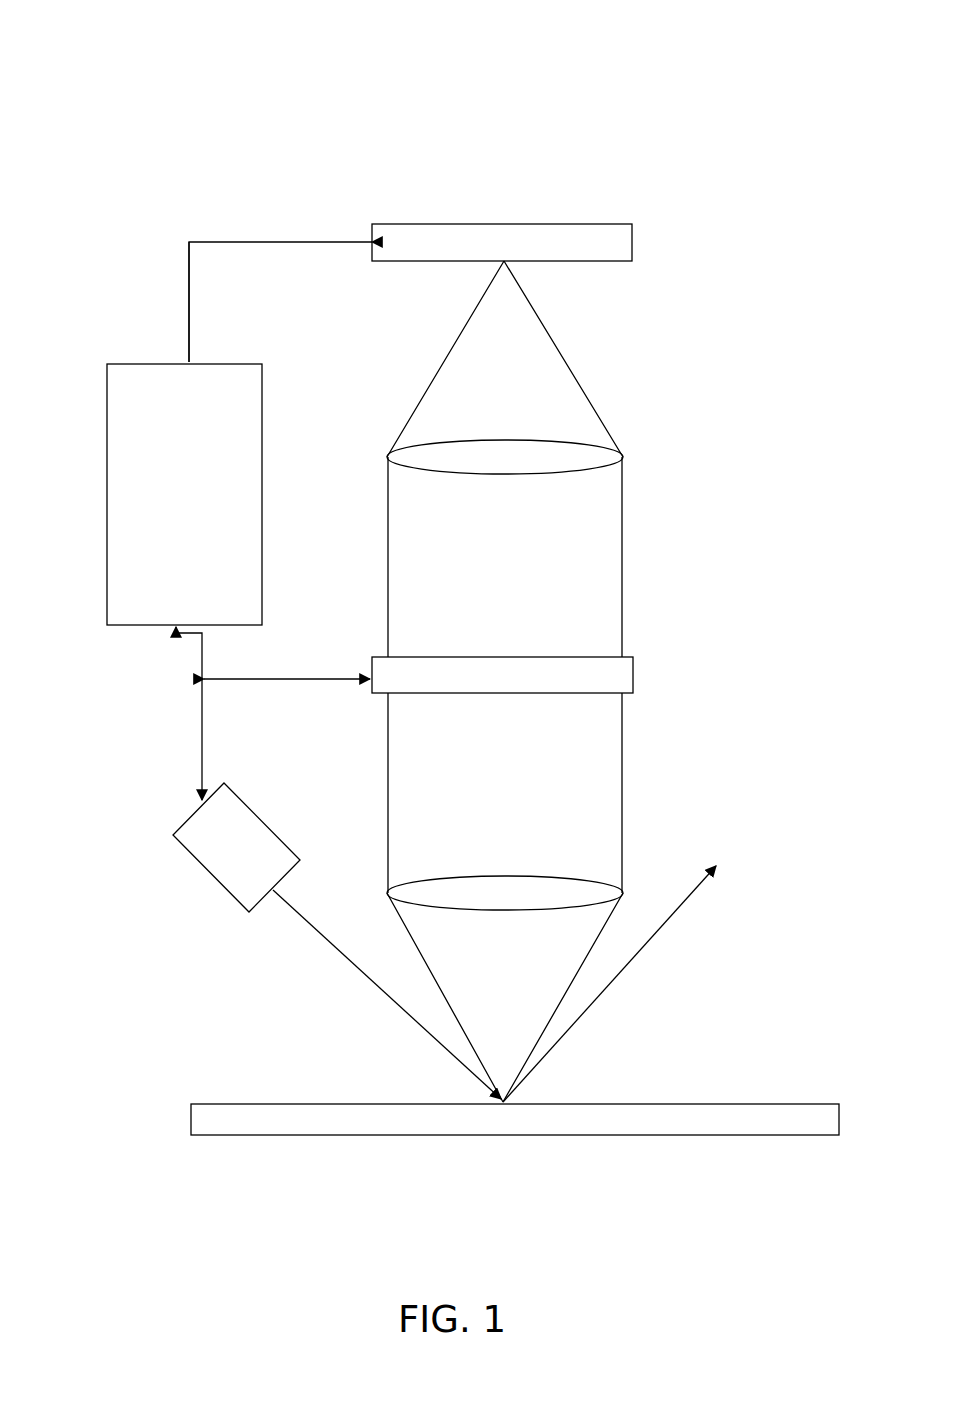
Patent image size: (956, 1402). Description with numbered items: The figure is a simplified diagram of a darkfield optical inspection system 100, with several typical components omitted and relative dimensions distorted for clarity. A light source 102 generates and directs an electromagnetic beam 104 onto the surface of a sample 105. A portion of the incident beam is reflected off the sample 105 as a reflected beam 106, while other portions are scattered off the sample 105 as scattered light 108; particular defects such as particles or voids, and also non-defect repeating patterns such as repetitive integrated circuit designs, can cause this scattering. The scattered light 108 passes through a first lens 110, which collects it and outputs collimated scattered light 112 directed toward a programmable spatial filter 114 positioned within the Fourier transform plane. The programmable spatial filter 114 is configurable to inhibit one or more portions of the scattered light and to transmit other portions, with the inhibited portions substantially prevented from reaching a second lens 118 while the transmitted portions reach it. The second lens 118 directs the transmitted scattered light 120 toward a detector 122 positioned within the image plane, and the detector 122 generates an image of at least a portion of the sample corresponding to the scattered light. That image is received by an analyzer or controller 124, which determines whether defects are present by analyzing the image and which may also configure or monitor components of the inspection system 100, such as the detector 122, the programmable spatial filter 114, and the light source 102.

The inspection system 100 is at (298, 58).
The light source 102 is at (257, 813).
The electromagnetic beam 104 is at (343, 962).
The sample 105 is at (515, 1119).
The reflected beam 106 is at (652, 937).
The scattered light 108 is at (505, 997).
The first lens 110 is at (505, 893).
The collimated scattered light 112 is at (605, 737).
The programmable spatial filter 114 is at (633, 672).
The second lens 118 is at (505, 457).
The transmitted scattered light 120 is at (505, 359).
The detector 122 is at (632, 237).
The analyzer or controller 124 is at (184, 494).